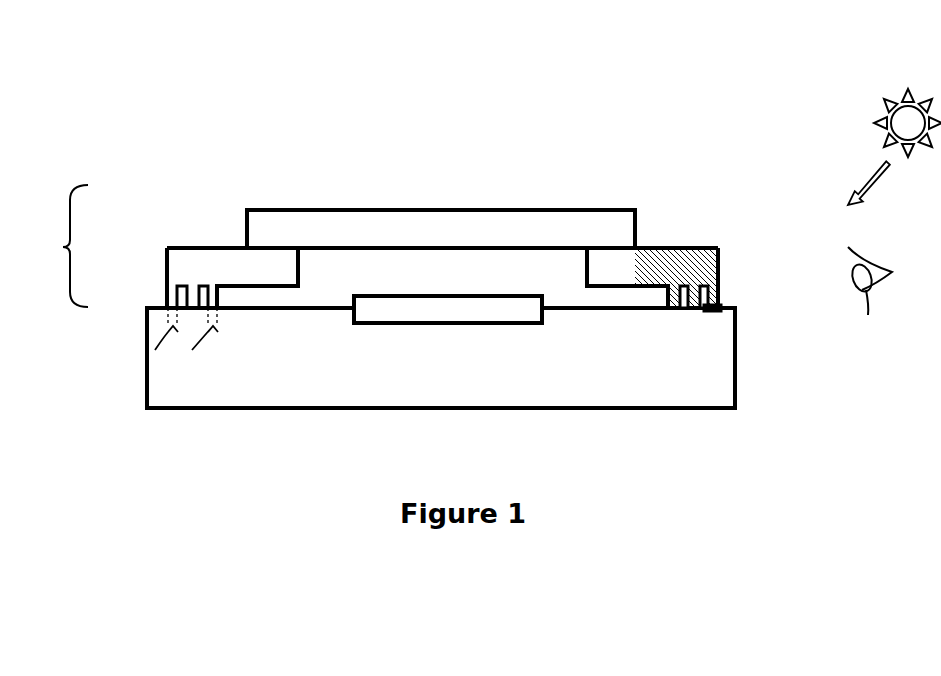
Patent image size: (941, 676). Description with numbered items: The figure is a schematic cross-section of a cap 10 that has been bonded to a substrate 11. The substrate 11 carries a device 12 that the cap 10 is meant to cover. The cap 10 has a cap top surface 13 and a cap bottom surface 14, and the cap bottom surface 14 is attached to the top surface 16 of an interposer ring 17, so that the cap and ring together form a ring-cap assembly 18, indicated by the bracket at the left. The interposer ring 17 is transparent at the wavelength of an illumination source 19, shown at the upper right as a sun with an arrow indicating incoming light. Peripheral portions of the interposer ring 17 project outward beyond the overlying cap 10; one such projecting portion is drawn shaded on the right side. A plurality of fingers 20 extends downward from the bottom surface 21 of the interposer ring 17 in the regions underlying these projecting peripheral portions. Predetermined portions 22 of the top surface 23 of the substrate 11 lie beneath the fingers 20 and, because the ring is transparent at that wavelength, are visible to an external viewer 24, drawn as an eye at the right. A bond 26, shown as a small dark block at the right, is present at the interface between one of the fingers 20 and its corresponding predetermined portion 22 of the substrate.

The cap 10 is at (355, 225).
The substrate 11 is at (722, 347).
The device 12 is at (531, 317).
The cap top surface 13 is at (617, 210).
The cap bottom surface 14 is at (512, 249).
The top surface of interposer ring 16 is at (668, 248).
The interposer ring 17 is at (245, 260).
The ring-cap assembly 18 is at (63, 247).
The illumination source 19 is at (903, 103).
The fingers 20 is at (194, 290).
The bottom surface of interposer ring 21 is at (270, 288).
The predetermined portions 22 is at (192, 350).
The top surface of substrate 23 is at (648, 313).
The external viewer 24 is at (868, 286).
The bond 26 is at (722, 306).